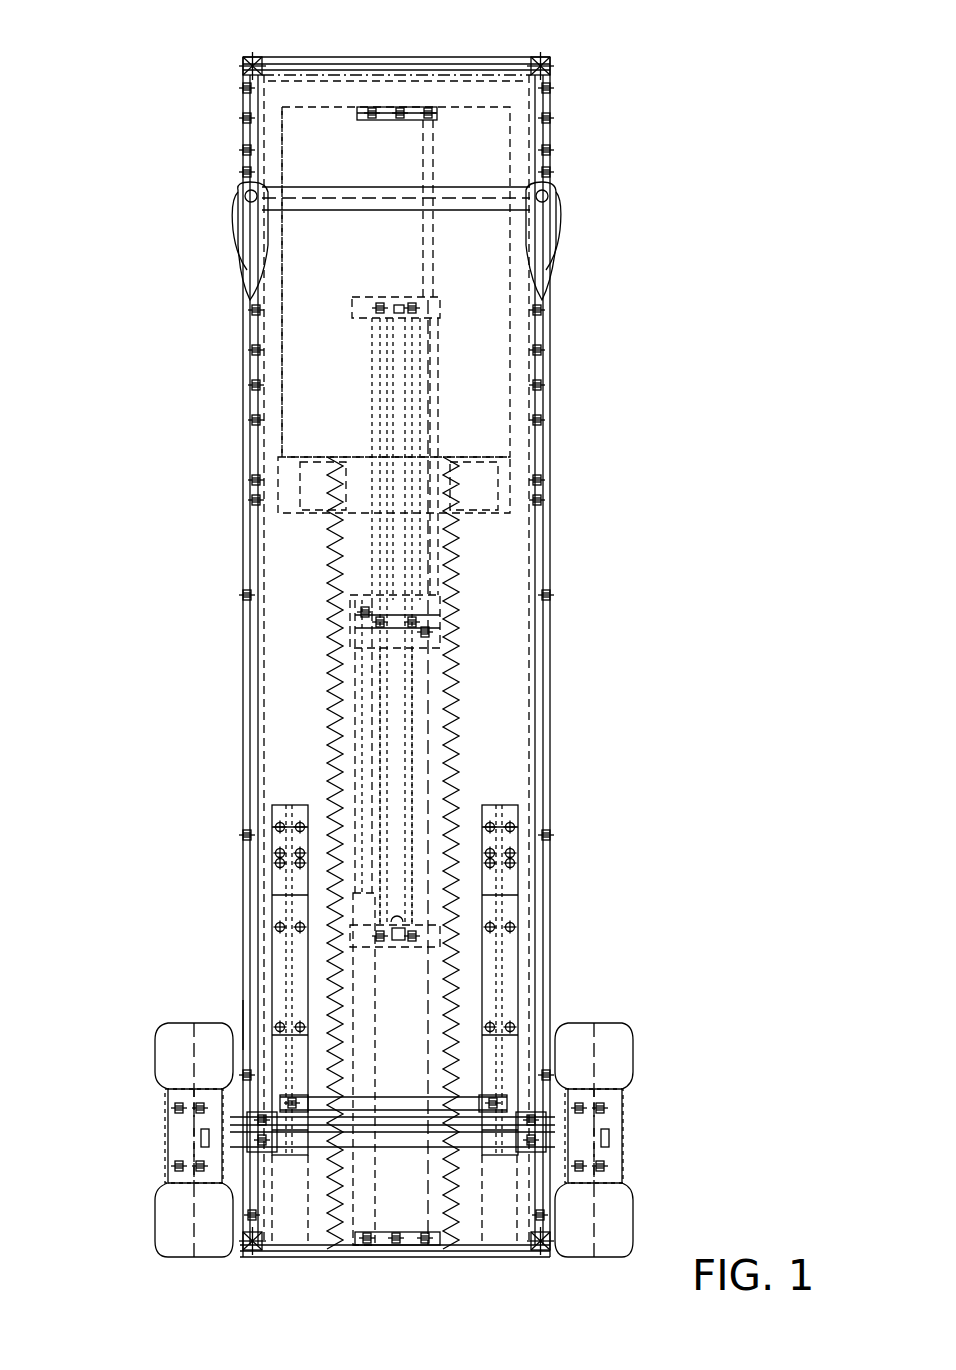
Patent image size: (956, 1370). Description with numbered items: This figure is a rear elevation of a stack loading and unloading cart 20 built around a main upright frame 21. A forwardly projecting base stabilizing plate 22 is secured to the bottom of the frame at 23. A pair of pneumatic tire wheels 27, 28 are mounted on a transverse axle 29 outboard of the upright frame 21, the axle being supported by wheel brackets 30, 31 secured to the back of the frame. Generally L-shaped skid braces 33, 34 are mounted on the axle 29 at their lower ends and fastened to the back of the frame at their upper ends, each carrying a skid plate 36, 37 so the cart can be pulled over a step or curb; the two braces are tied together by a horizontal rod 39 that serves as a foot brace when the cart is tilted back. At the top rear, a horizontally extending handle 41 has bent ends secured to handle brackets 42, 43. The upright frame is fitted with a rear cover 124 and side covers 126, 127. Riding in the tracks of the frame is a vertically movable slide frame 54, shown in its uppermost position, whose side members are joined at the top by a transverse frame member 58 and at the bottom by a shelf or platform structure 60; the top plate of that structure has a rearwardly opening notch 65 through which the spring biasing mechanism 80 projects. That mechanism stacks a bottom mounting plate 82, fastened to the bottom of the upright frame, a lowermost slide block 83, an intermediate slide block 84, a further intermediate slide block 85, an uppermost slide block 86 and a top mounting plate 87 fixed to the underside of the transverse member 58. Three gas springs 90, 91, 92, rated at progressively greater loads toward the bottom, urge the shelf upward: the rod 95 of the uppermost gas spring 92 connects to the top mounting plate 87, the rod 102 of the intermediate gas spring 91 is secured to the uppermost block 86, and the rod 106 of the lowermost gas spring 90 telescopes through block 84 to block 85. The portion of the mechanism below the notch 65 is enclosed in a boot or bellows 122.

The stack loading and unloading cart 20 is at (568, 567).
The main upright frame 21 is at (545, 677).
The base stabilizing plate 22 is at (472, 1258).
The securement of base stabilizing plate 23 is at (252, 1254).
The pneumatic tire wheel 27 is at (165, 1060).
The pneumatic tire wheel 28 is at (620, 1042).
The transverse axle 29 is at (400, 1147).
The wheel bracket 30 is at (258, 1172).
The wheel bracket 31 is at (530, 1178).
The skid brace 33 is at (265, 948).
The skid brace 34 is at (512, 952).
The skid plate 36 is at (290, 905).
The skid plate 37 is at (510, 905).
The horizontal rod 39 is at (400, 1097).
The handle 41 is at (470, 210).
The handle bracket 42 is at (240, 245).
The handle bracket 43 is at (553, 240).
The slide frame 54 is at (488, 390).
The transverse frame member 58 is at (478, 90).
The shelf or platform structure 60 is at (270, 478).
The cutout or notch 65 is at (360, 455).
The spring biasing mechanism 80 is at (468, 732).
The bottom mounting plate 82 is at (415, 1252).
The lowermost slide block 83 is at (400, 955).
The intermediate slide block 84 is at (440, 640).
The further intermediate slide block 85 is at (440, 612).
The uppermost slide block 86 is at (445, 318).
The top mounting plate 87 is at (420, 107).
The lowermost gas spring 90 is at (355, 1005).
The intermediate gas spring 91 is at (400, 788).
The uppermost gas spring 92 is at (440, 432).
The rod 95 is at (437, 148).
The rod 102 is at (390, 528).
The rod 106 is at (350, 760).
The boot or bellows 122 is at (320, 700).
The rear cover 124 is at (300, 298).
The side cover 126 is at (243, 612).
The side cover 127 is at (551, 483).